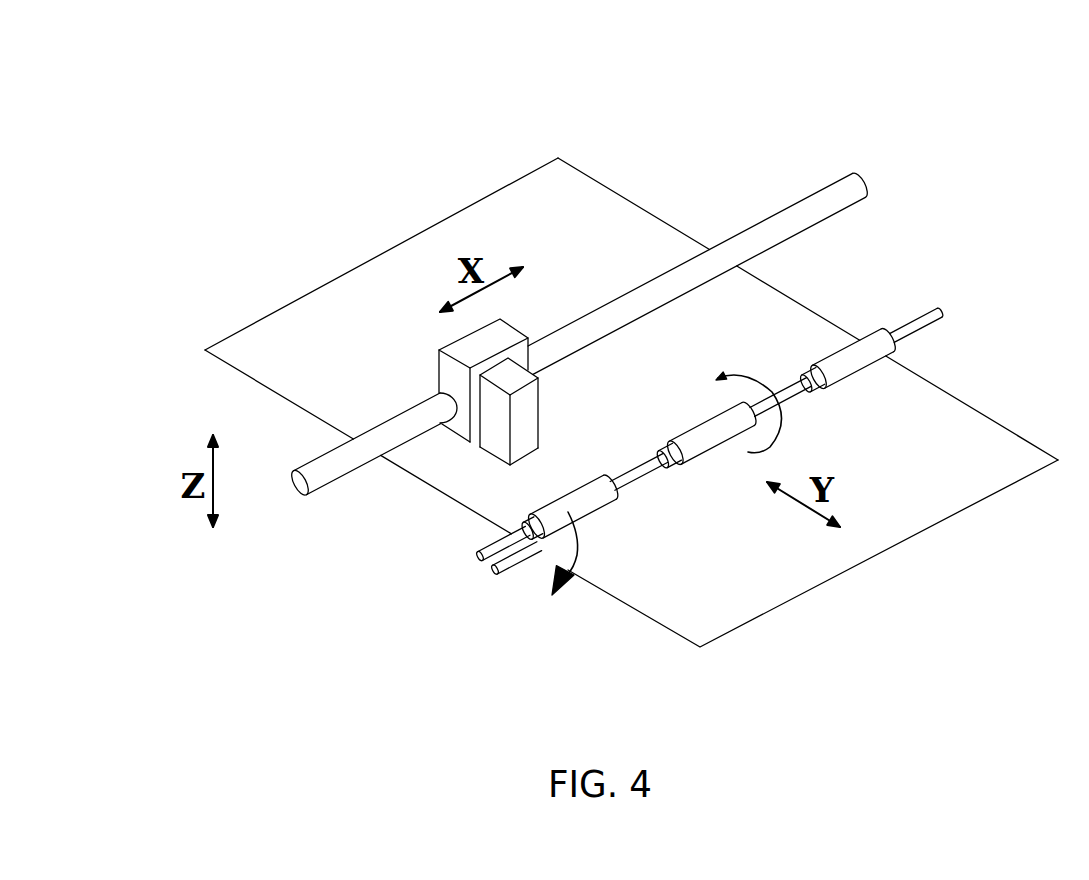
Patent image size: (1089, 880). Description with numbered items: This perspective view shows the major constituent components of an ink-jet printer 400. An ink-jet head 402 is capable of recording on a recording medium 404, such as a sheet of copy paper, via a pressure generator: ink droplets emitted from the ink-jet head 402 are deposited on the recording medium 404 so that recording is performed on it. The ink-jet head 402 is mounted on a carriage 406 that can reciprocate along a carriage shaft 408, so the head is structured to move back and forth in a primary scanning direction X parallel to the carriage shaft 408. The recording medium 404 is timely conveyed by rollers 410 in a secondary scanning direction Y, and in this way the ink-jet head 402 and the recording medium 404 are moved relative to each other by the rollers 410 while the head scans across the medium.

The ink-jet printer 400 is at (654, 84).
The ink-jet head 402 is at (536, 410).
The recording medium 404 is at (975, 423).
The carriage 406 is at (511, 327).
The carriage shaft 408 is at (776, 222).
The rollers 410 is at (860, 357).